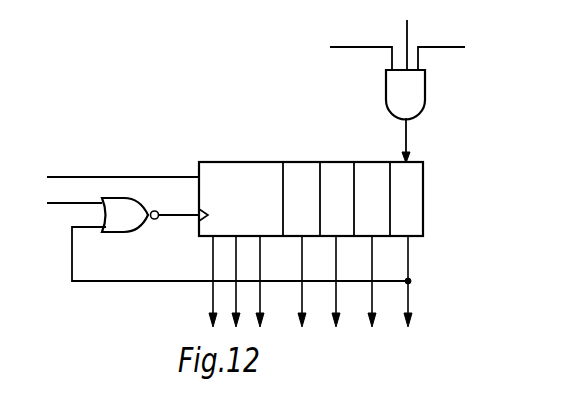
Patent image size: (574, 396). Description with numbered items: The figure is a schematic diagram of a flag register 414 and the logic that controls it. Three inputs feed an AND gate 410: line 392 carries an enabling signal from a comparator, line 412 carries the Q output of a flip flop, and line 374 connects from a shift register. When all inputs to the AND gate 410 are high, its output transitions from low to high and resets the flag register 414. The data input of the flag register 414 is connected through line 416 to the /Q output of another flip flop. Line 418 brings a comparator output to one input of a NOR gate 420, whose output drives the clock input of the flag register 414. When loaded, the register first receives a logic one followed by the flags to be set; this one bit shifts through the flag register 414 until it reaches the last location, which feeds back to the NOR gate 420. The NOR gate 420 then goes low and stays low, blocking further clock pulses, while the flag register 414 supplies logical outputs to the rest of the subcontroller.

The line 374 is at (367, 47).
The line 412 is at (408, 40).
The line 392 is at (437, 43).
The AND gate 410 is at (425, 106).
The flag register 414 is at (423, 210).
The line 416 is at (107, 177).
The line 418 is at (66, 204).
The NOR gate 420 is at (120, 232).